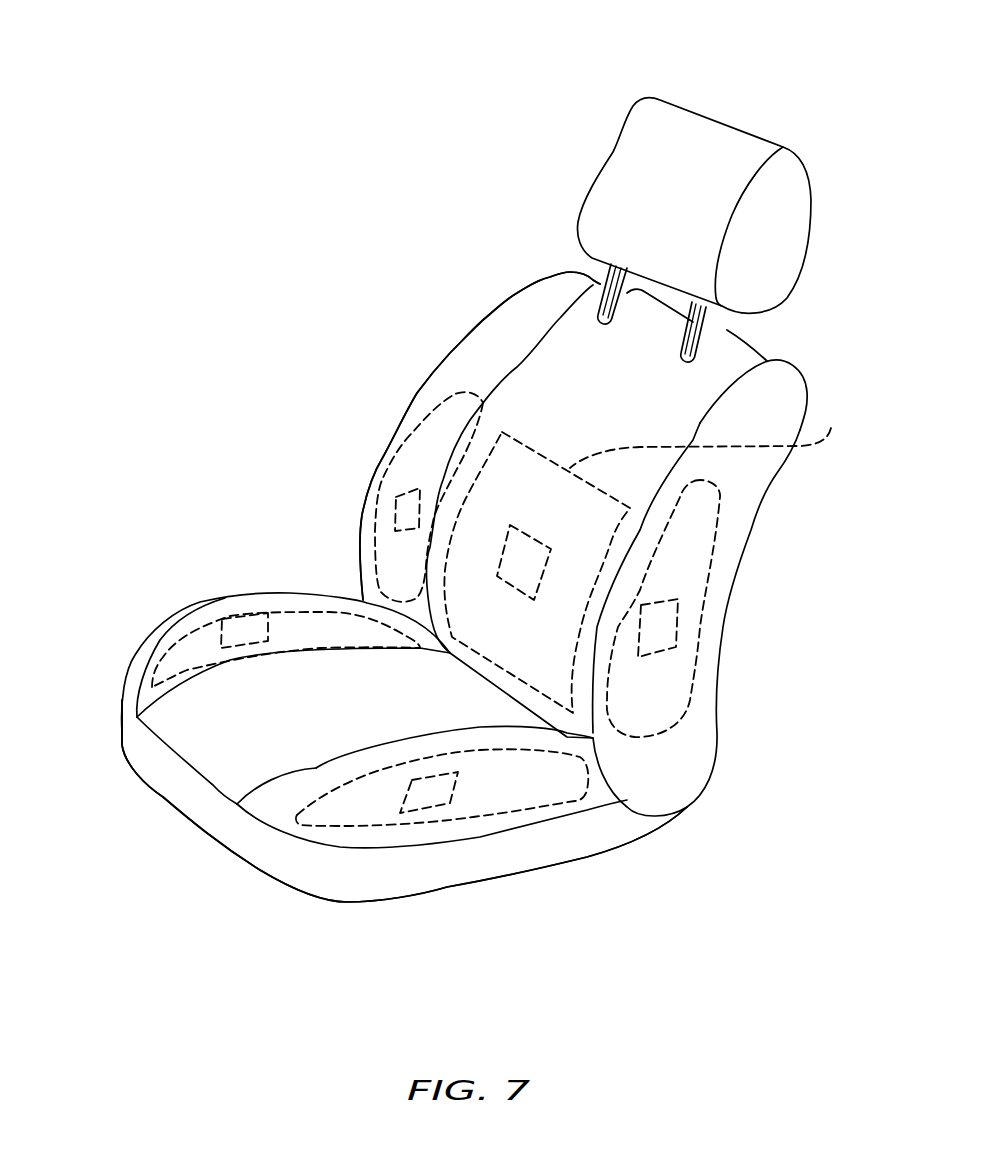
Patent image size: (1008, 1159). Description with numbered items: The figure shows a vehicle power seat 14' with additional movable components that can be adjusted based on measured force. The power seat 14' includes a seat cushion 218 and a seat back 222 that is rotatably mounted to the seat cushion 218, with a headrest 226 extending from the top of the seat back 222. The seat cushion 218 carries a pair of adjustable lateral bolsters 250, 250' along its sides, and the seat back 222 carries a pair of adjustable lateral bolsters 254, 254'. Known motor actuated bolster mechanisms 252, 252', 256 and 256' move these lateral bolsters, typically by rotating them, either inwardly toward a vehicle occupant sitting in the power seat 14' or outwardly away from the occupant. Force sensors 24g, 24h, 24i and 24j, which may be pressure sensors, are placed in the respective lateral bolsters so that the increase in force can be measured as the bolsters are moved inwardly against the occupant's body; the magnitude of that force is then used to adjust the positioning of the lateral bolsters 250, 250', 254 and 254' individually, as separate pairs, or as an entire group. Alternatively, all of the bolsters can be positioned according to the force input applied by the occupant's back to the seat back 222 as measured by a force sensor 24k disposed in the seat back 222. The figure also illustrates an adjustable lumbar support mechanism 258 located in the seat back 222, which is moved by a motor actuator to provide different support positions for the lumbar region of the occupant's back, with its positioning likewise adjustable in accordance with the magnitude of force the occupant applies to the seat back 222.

The power seat 14' is at (404, 463).
The headrest 226 is at (734, 125).
The seat back 222 is at (713, 373).
The lateral bolster 254 is at (418, 469).
The bolster mechanism 256 is at (425, 463).
The force sensor 24g is at (398, 490).
The force sensor 24k is at (526, 452).
The lumbar support mechanism 258 is at (713, 433).
The lateral bolster 254' is at (718, 578).
The bolster mechanism 256' is at (732, 608).
The force sensor 24h is at (668, 600).
The seat cushion 218 is at (202, 742).
The lateral bolster 250 is at (286, 609).
The bolster mechanism 252 is at (286, 589).
The force sensor 24i is at (222, 632).
The lateral bolster 250' is at (203, 789).
The bolster mechanism 252' is at (434, 817).
The force sensor 24j is at (423, 810).